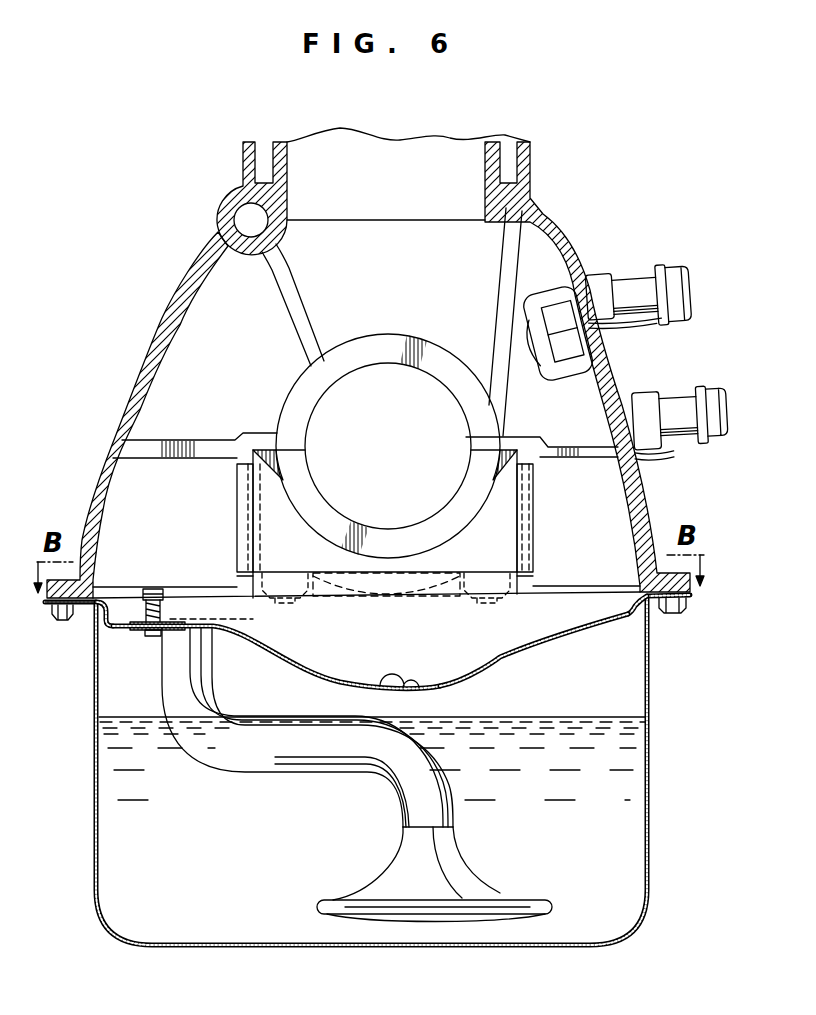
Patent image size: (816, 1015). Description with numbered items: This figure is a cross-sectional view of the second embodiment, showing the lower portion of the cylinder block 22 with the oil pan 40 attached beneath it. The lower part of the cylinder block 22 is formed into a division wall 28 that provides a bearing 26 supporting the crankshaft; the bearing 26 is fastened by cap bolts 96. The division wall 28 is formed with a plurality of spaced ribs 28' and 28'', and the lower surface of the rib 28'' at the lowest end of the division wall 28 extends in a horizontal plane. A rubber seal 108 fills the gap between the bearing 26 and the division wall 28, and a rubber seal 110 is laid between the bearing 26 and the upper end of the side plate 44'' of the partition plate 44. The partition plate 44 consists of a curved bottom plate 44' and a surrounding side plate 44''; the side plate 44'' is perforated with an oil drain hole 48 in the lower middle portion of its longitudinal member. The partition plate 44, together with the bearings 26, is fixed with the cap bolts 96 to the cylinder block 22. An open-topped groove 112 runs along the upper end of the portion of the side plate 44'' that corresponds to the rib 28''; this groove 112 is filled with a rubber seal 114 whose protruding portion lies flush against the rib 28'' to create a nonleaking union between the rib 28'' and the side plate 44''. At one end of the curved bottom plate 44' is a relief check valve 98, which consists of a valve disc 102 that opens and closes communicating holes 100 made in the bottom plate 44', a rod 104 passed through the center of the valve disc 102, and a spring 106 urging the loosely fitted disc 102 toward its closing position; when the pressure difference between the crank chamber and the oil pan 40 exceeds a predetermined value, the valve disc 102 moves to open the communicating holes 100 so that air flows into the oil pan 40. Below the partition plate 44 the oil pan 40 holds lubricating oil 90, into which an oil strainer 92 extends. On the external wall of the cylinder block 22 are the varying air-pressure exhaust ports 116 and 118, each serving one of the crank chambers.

The cylinder block 22 is at (553, 225).
The bearing 26 is at (267, 450).
The division wall 28 is at (365, 397).
The rib 28' is at (407, 325).
The rib 28'' is at (388, 556).
The oil pan 40 is at (630, 927).
The partition plate 44 is at (276, 670).
The bottom plate 44' is at (534, 655).
The side plate 44'' is at (385, 567).
The oil drain hole 48 is at (413, 684).
The lubricating oil 90 is at (346, 852).
The oil strainer 92 is at (431, 918).
The cap bolts 96 is at (282, 603).
The relief check valve 98 is at (118, 636).
The communicating holes 100 is at (166, 604).
The valve disc 102 is at (140, 636).
The rod 104 is at (152, 589).
The spring 106 is at (161, 600).
The rubber seal 108 is at (238, 483).
The rubber seal 110 is at (433, 573).
The open-topped groove 112 is at (100, 620).
The rubber seal 114 is at (107, 592).
The varying air-pressure exhaust port 116 is at (641, 282).
The varying air-pressure exhaust port 118 is at (677, 400).